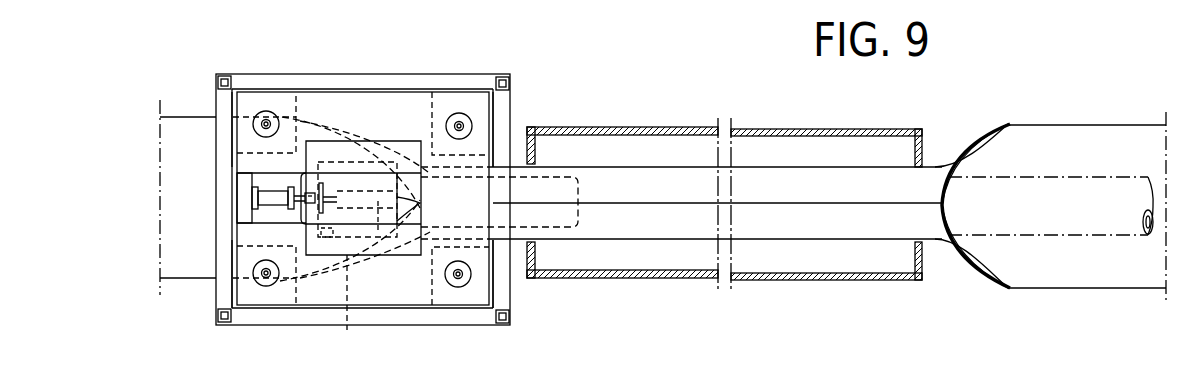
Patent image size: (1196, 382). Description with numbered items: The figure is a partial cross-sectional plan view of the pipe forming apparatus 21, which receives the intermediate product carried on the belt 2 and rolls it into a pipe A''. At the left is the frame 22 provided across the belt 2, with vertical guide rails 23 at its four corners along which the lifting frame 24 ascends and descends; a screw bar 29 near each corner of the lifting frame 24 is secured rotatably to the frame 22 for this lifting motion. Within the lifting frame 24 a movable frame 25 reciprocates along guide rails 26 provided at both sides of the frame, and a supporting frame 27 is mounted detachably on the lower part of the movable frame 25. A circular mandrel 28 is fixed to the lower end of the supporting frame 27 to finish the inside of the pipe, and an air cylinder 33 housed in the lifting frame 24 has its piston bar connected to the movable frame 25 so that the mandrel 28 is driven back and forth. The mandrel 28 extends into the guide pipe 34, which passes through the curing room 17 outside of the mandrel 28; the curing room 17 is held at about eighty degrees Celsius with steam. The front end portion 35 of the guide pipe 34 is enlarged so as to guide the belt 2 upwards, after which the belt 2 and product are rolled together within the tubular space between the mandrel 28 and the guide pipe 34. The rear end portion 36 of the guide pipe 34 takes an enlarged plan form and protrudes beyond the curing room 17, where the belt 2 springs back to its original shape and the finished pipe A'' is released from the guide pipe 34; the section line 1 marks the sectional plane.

The section line 1 is at (188, 105).
The belt 2 is at (1128, 123).
The curing room 17 is at (687, 126).
The pipe forming apparatus 21 is at (308, 72).
The frame 22 is at (500, 77).
The vertical guide rails 23 is at (236, 90).
The lifting frame 24 is at (372, 102).
The movable frame 25 is at (353, 213).
The guide rails 26 is at (331, 230).
The supporting frame 27 is at (379, 233).
The circular mandrel 28 is at (578, 210).
The screw bar 29 is at (452, 127).
The air cylinder 33 is at (252, 193).
The guide pipe 34 is at (825, 229).
The front end portion 35 is at (348, 306).
The rear end portion 36 is at (981, 137).
The pipe A'' is at (1111, 253).